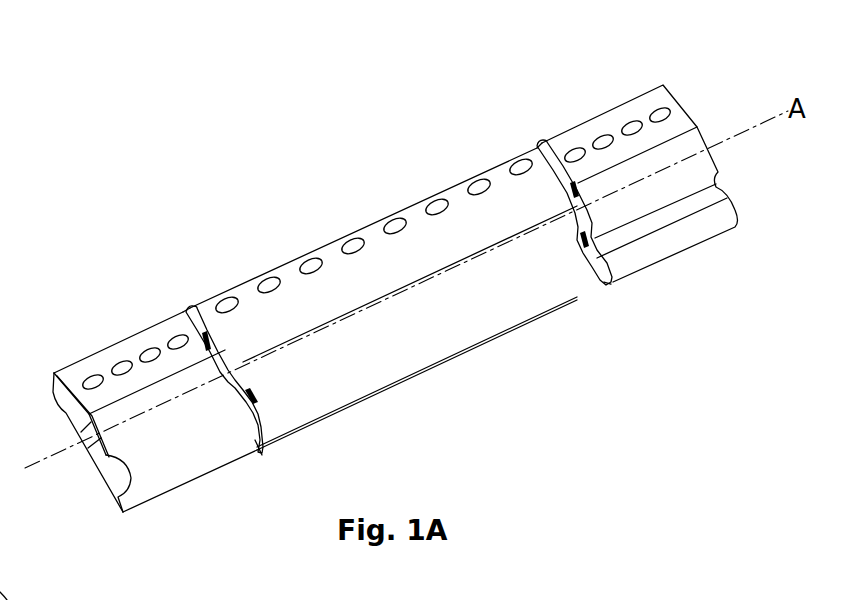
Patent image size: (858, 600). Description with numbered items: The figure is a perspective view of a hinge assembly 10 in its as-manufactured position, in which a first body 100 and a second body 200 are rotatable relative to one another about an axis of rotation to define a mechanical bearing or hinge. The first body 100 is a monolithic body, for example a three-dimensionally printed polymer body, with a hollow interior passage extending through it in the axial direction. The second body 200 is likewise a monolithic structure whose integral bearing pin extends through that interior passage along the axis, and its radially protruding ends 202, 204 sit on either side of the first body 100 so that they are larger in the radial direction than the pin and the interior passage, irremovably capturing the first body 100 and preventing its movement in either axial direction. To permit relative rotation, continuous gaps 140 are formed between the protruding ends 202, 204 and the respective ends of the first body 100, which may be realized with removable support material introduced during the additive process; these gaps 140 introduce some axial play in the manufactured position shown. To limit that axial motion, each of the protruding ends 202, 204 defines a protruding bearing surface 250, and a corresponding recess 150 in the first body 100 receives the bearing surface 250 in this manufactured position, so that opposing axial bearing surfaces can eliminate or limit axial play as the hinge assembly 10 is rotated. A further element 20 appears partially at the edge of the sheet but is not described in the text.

The hinge assembly 10 is at (92, 146).
The first body 100 is at (432, 318).
The continuous gaps 140 is at (182, 302).
The recess 150 is at (257, 397).
The second body 200 is at (394, 284).
The protruding end 202 is at (117, 350).
The protruding end 204 is at (613, 120).
The protruding bearing surface 250 is at (249, 413).
The attachment 20 is at (11, 558).